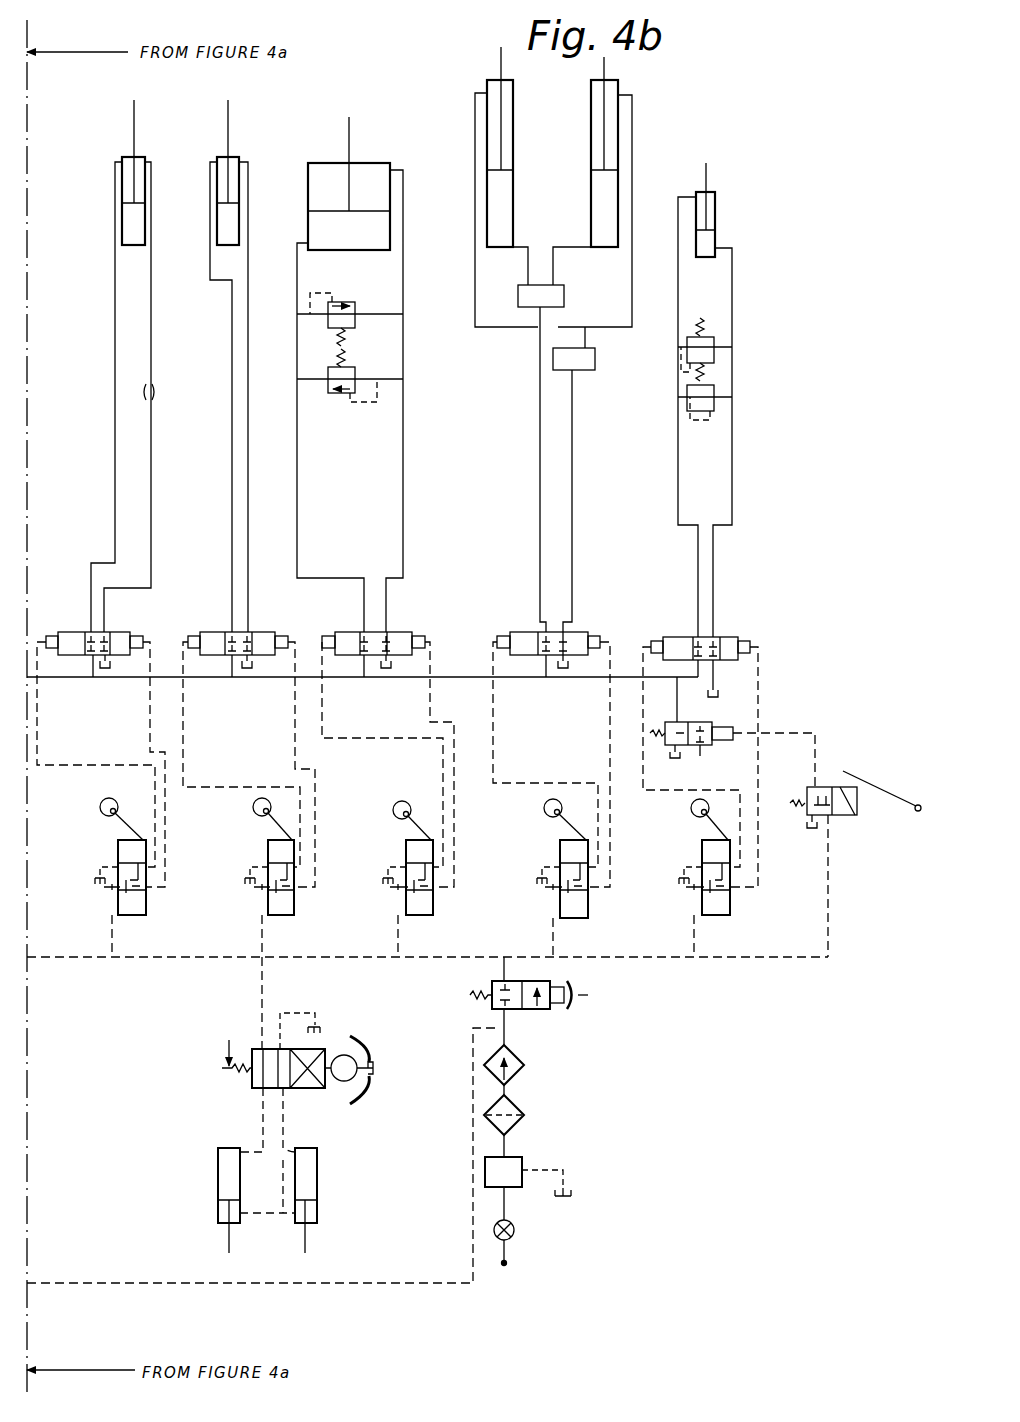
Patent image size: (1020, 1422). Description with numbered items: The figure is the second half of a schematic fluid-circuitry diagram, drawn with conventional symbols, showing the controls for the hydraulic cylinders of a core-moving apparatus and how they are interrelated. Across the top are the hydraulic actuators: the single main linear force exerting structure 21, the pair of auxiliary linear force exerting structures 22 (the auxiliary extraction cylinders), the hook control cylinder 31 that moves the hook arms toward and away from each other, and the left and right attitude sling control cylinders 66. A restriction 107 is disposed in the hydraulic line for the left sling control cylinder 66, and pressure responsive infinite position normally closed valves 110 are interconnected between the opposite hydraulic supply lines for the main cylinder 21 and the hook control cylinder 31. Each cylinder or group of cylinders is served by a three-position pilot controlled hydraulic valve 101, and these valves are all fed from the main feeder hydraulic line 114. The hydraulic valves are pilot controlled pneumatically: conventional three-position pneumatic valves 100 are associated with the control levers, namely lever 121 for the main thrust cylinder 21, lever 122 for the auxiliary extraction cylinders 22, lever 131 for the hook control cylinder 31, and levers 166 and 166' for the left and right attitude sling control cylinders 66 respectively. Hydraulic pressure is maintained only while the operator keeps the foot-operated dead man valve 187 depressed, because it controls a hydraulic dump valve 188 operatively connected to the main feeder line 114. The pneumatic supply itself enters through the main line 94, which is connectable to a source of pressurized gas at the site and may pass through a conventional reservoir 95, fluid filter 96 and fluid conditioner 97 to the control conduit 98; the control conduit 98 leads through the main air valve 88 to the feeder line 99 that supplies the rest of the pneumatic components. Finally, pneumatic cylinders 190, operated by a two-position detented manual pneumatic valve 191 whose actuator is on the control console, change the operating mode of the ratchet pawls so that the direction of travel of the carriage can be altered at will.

The main linear force exerting structure 21 is at (398, 148).
The auxiliary linear force exerting structures 22 is at (583, 120).
The hook control cylinder 31 is at (722, 205).
The attitude sling control cylinders 66 is at (212, 156).
The main air valve 88 is at (541, 983).
The main line 94 is at (505, 1210).
The reservoir 95 is at (522, 1160).
The fluid filter 96 is at (525, 1115).
The fluid conditioner 97 is at (562, 1045).
The control conduit 98 is at (150, 1268).
The feeder line 99 is at (370, 960).
The three-position pneumatic valves 100 is at (278, 908).
The three-position pilot controlled hydraulic valve 101 is at (517, 637).
The restriction 107 is at (155, 395).
The pressure responsive infinite position normally closed valves 110 is at (372, 335).
The main feeder hydraulic line 114 is at (512, 680).
The control lever 121 is at (393, 805).
The control lever 122 is at (544, 810).
The control lever 131 is at (691, 810).
The control lever 166 is at (89, 819).
The control lever 166' is at (236, 819).
The foot-operated dead man valve 187 is at (848, 820).
The hydraulic dump valve 188 is at (712, 722).
The pneumatic cylinders 190 is at (238, 1147).
The two-position detented manual pneumatic valve 191 is at (318, 1088).